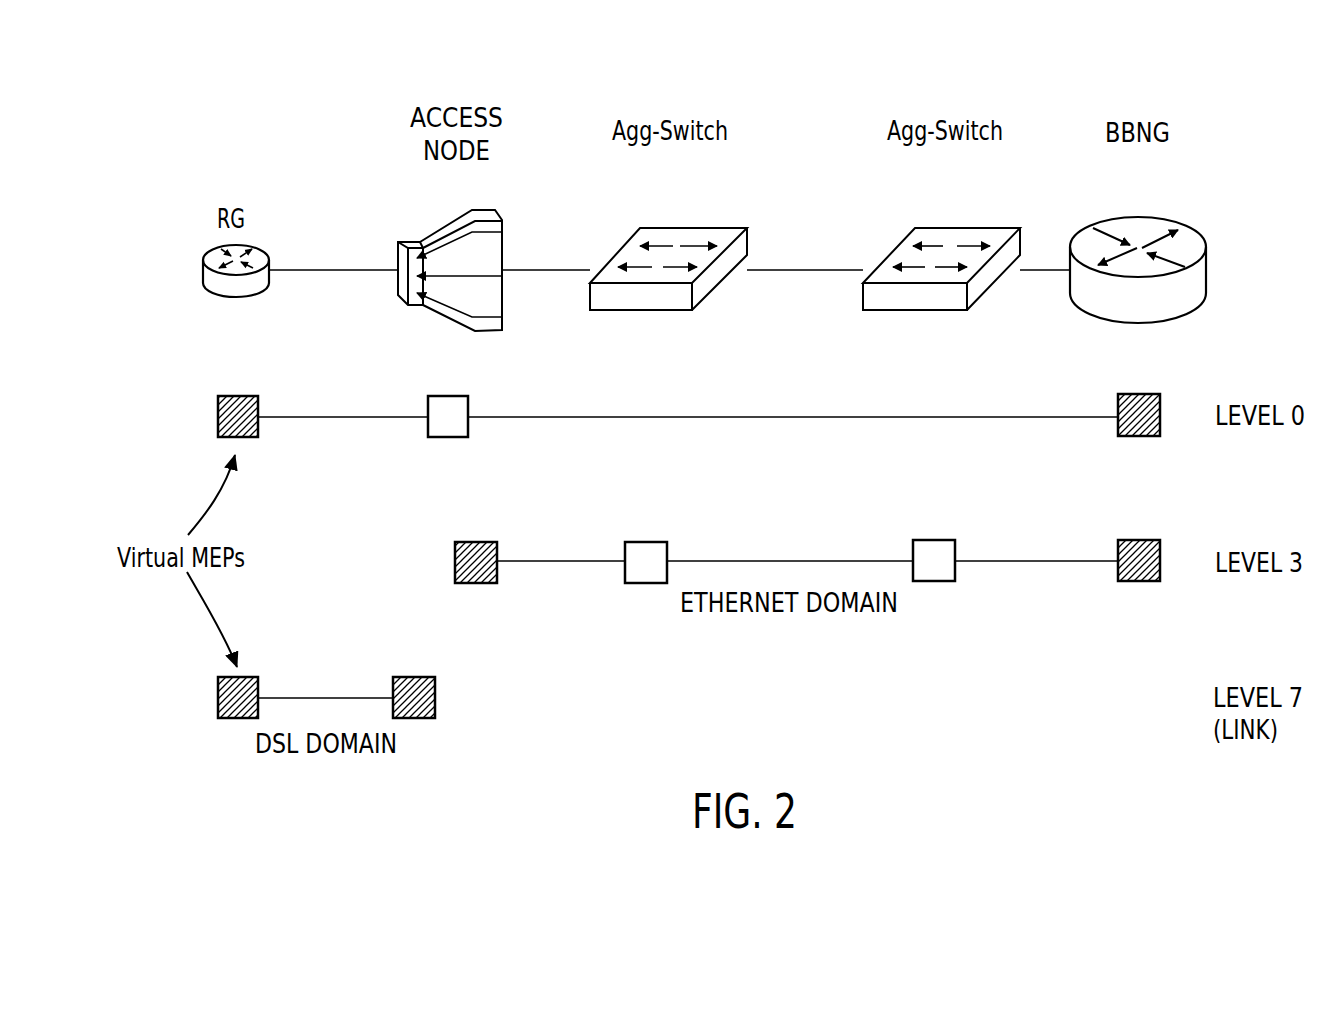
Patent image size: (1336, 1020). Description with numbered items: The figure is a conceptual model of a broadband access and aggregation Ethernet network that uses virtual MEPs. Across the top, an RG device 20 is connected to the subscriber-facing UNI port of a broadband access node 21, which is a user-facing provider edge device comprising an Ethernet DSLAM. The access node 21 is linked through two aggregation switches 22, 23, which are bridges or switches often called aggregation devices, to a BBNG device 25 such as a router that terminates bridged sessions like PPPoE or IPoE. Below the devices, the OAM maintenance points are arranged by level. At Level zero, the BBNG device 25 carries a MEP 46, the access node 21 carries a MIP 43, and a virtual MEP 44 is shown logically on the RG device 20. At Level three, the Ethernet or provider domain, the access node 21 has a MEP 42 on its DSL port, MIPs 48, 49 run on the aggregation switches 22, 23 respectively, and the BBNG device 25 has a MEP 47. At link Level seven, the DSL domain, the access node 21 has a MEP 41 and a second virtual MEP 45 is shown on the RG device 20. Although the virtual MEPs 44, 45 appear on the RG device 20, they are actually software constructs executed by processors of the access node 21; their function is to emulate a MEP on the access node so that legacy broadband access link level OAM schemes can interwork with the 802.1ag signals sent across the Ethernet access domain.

The RG device 20 is at (227, 297).
The broadband access node 21 is at (473, 210).
The aggregation switch 22 is at (690, 228).
The aggregation switch 23 is at (962, 228).
The BBNG device 25 is at (1140, 215).
The MEP 41 is at (415, 677).
The MEP 42 is at (455, 562).
The MIP 43 is at (447, 396).
The virtual MEP 44 is at (218, 415).
The virtual MEP 45 is at (218, 697).
The MEP 46 is at (1141, 394).
The MEP 47 is at (1141, 540).
The MIP 48 is at (647, 542).
The MIP 49 is at (935, 540).